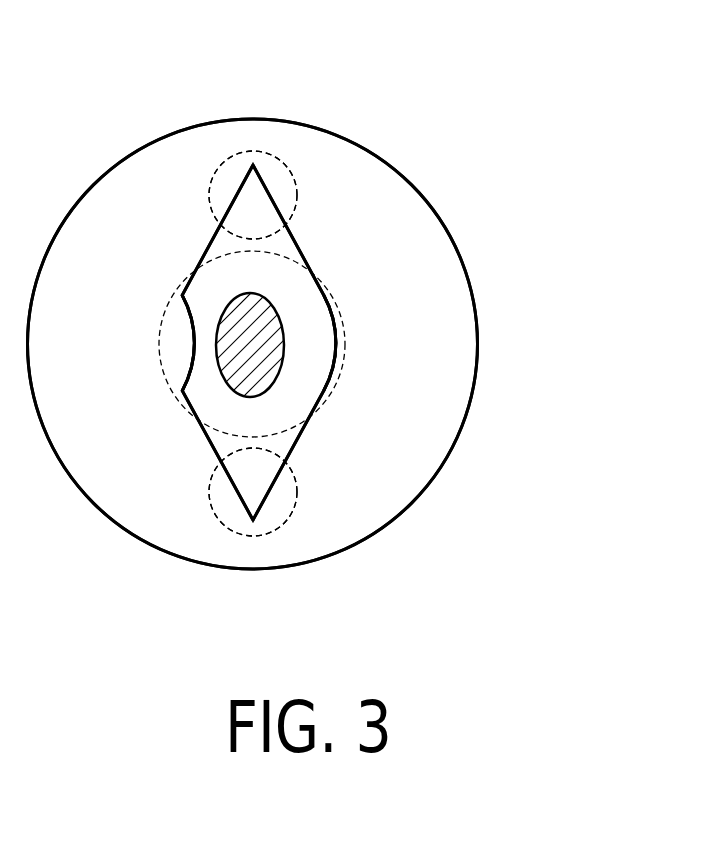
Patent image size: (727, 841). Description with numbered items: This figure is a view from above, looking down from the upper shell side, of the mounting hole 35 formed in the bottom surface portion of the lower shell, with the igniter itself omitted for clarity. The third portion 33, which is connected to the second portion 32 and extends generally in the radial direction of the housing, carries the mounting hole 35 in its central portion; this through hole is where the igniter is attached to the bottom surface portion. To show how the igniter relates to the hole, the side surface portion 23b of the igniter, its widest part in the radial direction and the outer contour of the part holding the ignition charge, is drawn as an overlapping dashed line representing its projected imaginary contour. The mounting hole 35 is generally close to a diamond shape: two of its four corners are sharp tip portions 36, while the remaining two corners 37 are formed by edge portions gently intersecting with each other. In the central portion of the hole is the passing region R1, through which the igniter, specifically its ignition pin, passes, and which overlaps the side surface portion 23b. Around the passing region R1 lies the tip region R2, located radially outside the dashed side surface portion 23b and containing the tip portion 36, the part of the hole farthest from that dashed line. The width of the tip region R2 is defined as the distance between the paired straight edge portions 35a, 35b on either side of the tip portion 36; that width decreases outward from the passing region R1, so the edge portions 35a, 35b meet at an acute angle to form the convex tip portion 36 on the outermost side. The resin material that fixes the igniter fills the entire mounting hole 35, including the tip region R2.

The second portion 32 is at (478, 345).
The third portion 33 is at (407, 242).
The side surface portion 23b is at (345, 326).
The mounting hole 35 is at (153, 438).
The edge portion 35a is at (232, 492).
The edge portion 35b is at (273, 492).
The tip portion 36 is at (253, 165).
The corners 37 is at (168, 350).
The passing region R1 is at (217, 322).
The tip region R2 is at (283, 162).